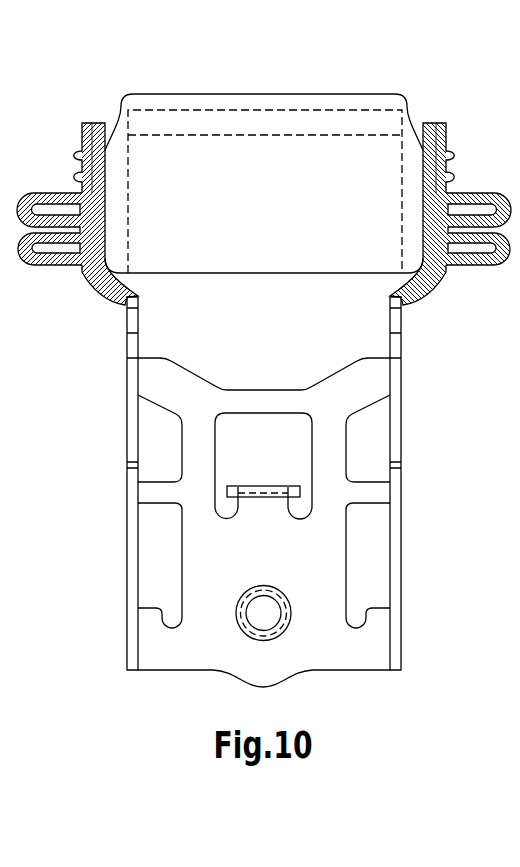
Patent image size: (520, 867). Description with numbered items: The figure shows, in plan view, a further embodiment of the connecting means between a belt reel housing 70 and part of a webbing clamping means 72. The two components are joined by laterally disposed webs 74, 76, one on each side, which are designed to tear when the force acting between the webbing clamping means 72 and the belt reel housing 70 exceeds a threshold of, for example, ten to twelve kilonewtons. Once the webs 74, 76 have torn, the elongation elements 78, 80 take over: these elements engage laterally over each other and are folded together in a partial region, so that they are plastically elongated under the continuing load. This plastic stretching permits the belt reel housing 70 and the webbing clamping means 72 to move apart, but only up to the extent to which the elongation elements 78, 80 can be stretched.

The belt reel housing 70 is at (395, 547).
The webbing clamping means 72 is at (330, 90).
The web 74 is at (110, 123).
The web 76 is at (415, 127).
The elongation element 78 is at (55, 193).
The elongation element 80 is at (501, 193).